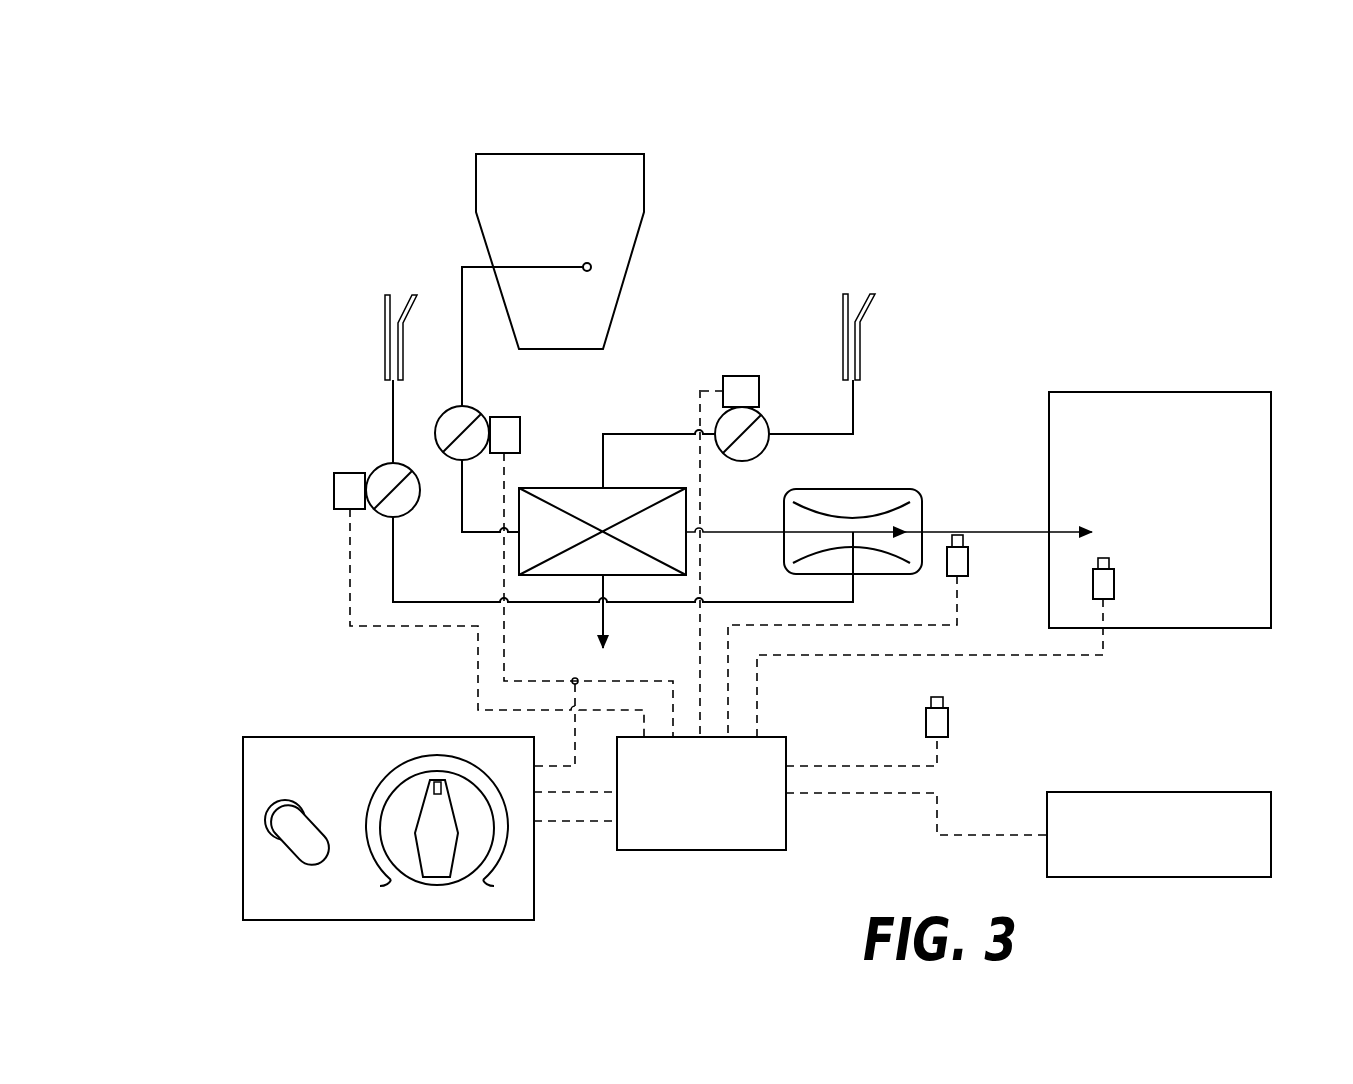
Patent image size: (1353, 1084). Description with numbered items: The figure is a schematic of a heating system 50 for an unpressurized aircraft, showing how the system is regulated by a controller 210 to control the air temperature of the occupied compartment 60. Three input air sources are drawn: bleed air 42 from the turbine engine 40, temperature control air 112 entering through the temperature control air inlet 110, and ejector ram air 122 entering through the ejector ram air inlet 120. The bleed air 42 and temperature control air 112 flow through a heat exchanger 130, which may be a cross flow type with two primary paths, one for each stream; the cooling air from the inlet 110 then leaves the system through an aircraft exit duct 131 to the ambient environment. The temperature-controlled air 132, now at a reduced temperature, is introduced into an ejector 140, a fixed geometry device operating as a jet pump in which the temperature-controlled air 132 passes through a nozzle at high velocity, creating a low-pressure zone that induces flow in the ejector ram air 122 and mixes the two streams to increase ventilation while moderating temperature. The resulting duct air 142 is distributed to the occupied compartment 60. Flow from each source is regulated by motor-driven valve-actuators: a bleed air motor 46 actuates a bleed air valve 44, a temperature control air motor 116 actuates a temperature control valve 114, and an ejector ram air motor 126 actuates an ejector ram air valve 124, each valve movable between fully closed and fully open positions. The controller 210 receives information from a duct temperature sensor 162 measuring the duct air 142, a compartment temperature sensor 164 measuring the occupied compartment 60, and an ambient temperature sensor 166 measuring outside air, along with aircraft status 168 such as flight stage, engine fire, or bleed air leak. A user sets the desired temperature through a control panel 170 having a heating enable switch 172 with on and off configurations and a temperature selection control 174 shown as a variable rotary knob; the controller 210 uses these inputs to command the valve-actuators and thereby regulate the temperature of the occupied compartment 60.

The turbine engine 40 is at (550, 147).
The bleed air 42 is at (457, 250).
The bleed air valve 44 is at (479, 411).
The bleed air motor 46 is at (526, 437).
The heating system 50 is at (884, 114).
The occupied compartment 60 is at (1171, 440).
The temperature control air inlet 110 is at (868, 341).
The temperature control air 112 is at (870, 403).
The temperature control valve 114 is at (771, 411).
The temperature control air motor 116 is at (745, 373).
The ejector ram air inlet 120 is at (378, 346).
The ejector ram air 122 is at (373, 410).
The ejector ram air valve 124 is at (369, 516).
The ejector ram air motor 126 is at (332, 483).
The heat exchanger 130 is at (564, 483).
The aircraft exit duct 131 is at (622, 629).
The temperature-controlled air 132 is at (748, 540).
The ejector 140 is at (876, 484).
The duct air 142 is at (988, 513).
The duct temperature sensor 162 is at (977, 553).
The compartment temperature sensor 164 is at (1117, 592).
The ambient temperature sensor 166 is at (952, 727).
The aircraft status 168 is at (1121, 788).
The control panel 170 is at (221, 775).
The heating enable switch 172 is at (304, 800).
The temperature selection control 174 is at (509, 851).
The controller 210 is at (690, 857).